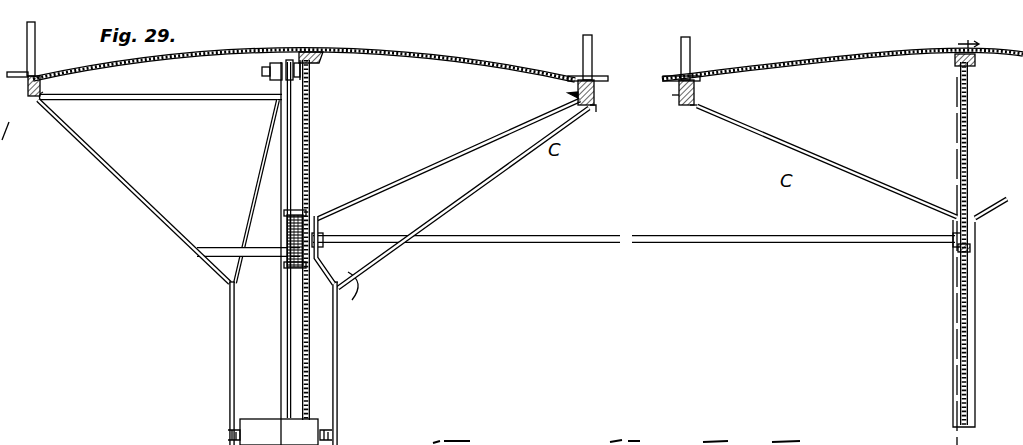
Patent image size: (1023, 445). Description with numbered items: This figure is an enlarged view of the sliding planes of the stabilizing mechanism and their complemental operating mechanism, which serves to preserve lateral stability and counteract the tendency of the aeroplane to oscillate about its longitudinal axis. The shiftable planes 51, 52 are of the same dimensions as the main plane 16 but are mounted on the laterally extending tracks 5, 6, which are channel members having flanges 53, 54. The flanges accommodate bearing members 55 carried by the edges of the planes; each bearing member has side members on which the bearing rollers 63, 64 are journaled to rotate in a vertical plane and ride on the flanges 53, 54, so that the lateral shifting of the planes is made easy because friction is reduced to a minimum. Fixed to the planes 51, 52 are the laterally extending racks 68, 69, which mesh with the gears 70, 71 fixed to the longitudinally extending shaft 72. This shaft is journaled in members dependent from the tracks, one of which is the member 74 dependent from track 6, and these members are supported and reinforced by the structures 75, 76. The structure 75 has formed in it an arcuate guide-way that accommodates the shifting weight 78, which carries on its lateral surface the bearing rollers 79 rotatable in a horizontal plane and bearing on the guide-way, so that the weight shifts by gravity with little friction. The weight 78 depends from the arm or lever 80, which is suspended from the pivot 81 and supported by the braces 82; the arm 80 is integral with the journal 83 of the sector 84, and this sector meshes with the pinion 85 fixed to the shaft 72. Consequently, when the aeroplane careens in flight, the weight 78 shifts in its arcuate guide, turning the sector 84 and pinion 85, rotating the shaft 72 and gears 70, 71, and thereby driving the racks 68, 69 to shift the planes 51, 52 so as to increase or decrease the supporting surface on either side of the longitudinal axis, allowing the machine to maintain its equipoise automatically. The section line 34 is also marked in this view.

The track 5 is at (591, 104).
The track 6 is at (691, 107).
The plane 16 is at (841, 167).
The section line 34 is at (963, 34).
The plane 51 is at (402, 58).
The plane 52 is at (798, 63).
The flange 53 is at (38, 74).
The flange 54 is at (41, 100).
The bearing member 55 is at (682, 99).
The bearing roller 63 is at (573, 94).
The bearing roller 64 is at (577, 105).
The rack 68 is at (318, 62).
The rack 69 is at (973, 65).
The gear 70 is at (311, 151).
The gear 71 is at (970, 137).
The shaft 72 is at (507, 242).
The member 74 is at (957, 247).
The structure 75 is at (133, 188).
The structure 76 is at (994, 213).
The shifting weight 78 is at (297, 433).
The bearing roller 79 is at (229, 438).
The arm 80 is at (278, 335).
The pivot 81 is at (262, 77).
The brace 82 is at (267, 143).
The journal 83 is at (288, 68).
The sector 84 is at (296, 112).
The pinion 85 is at (292, 267).